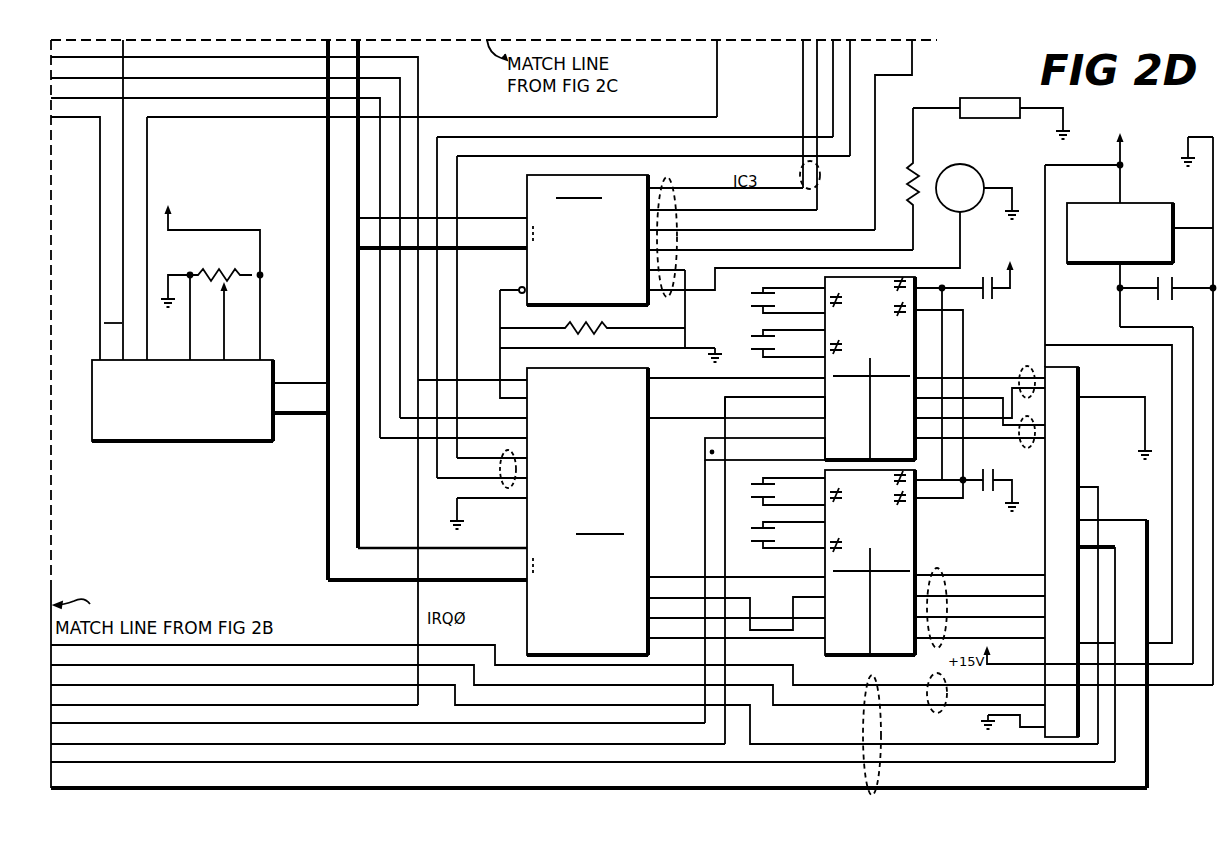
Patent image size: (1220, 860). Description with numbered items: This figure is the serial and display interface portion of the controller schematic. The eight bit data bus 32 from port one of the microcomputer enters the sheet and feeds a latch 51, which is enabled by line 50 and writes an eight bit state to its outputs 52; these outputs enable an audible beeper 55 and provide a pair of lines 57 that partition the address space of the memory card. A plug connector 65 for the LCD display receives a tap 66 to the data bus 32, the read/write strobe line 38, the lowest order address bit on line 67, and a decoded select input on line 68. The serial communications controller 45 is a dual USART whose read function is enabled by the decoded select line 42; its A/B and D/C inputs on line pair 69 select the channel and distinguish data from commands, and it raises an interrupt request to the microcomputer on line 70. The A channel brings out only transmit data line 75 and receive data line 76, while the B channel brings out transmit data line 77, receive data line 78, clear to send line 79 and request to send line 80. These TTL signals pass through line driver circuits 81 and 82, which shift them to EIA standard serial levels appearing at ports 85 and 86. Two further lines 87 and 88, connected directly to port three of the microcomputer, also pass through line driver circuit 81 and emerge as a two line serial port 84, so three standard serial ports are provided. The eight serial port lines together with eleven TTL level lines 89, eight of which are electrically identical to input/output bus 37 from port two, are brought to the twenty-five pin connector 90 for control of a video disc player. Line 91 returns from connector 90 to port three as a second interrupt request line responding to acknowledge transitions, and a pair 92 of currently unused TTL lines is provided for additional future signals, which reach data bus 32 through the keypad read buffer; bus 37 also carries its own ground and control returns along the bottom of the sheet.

The data bus 32 is at (328, 140).
The input/output bus 37 is at (1148, 737).
The read/write strobe line 38 is at (123, 140).
The decoded select line 42 is at (400, 364).
The serial communications controller 45 is at (528, 635).
The latch enable line 50 is at (498, 273).
The latch 51 is at (527, 188).
The latch outputs 52 is at (675, 185).
The audible beeper 55 is at (983, 173).
The partitioning lines 57 is at (822, 178).
The plug connector 65 is at (124, 444).
The data bus tap 66 is at (276, 418).
The address bit line 67 is at (148, 165).
The decoded select input line 68 is at (100, 220).
The A/B and D/C input line pair 69 is at (500, 490).
The interrupt request line 70 is at (234, 656).
The transmit data line 75 is at (680, 378).
The receive data line 76 is at (694, 418).
The transmit data line 77 is at (736, 565).
The receive data line 78 is at (678, 594).
The clear to send line 79 is at (736, 631).
The request to send line 80 is at (683, 628).
The line driver circuit 81 is at (918, 355).
The line driver circuit 82 is at (918, 548).
The serial port 84 is at (1024, 451).
The RS-232 port 85 is at (1026, 370).
The RS-232 port 86 is at (943, 571).
The serial line 87 is at (705, 503).
The serial line 88 is at (728, 504).
The TTL level lines 89 is at (863, 727).
The DB-25 connector 90 is at (1078, 367).
The second interrupt request line 91 is at (1080, 487).
The unused TTL input/output line pair 92 is at (936, 715).